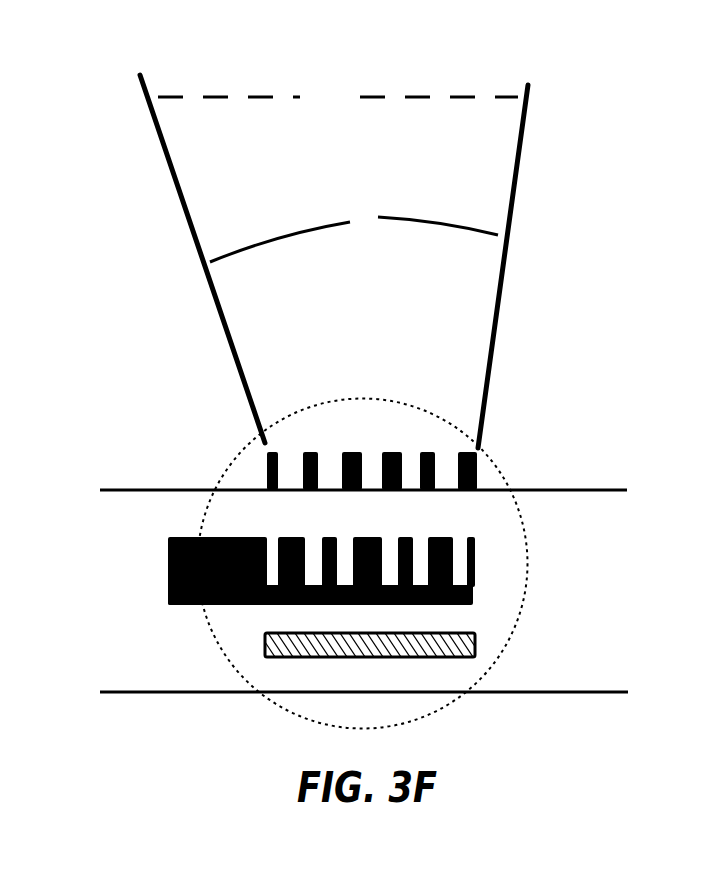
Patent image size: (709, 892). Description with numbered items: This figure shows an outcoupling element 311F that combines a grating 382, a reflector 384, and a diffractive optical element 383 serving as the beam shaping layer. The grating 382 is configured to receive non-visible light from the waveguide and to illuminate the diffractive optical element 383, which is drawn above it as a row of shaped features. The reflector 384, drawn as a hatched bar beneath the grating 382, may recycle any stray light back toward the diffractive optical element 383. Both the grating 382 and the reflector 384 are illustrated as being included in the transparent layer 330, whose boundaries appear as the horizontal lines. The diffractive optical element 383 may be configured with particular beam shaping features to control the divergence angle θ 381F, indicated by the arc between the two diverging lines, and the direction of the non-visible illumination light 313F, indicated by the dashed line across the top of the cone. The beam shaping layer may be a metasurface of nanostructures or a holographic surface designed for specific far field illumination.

The outcoupling element 311F is at (483, 452).
The non-visible illumination light 313F is at (338, 98).
The divergence angle θ 381F is at (350, 212).
The transparent layer 330 is at (166, 524).
The diffractive optical element (DOE) 383 is at (478, 472).
The grating 382 is at (483, 573).
The reflector 384 is at (483, 647).